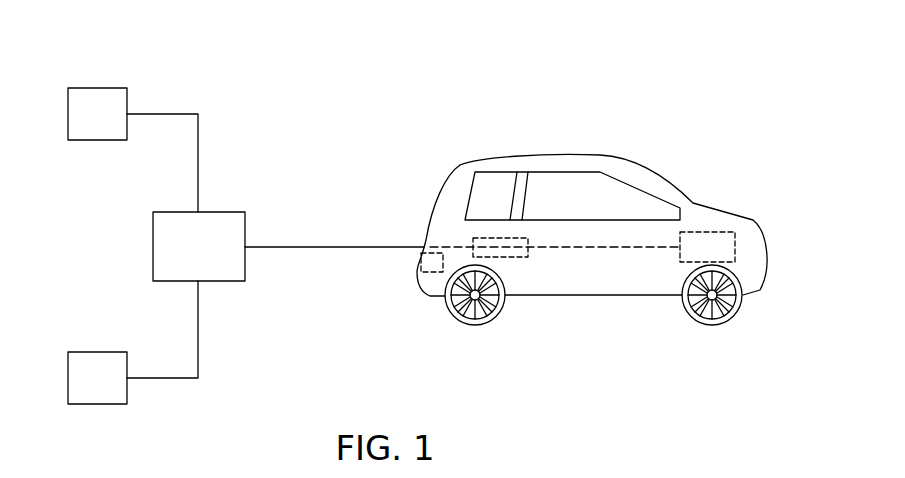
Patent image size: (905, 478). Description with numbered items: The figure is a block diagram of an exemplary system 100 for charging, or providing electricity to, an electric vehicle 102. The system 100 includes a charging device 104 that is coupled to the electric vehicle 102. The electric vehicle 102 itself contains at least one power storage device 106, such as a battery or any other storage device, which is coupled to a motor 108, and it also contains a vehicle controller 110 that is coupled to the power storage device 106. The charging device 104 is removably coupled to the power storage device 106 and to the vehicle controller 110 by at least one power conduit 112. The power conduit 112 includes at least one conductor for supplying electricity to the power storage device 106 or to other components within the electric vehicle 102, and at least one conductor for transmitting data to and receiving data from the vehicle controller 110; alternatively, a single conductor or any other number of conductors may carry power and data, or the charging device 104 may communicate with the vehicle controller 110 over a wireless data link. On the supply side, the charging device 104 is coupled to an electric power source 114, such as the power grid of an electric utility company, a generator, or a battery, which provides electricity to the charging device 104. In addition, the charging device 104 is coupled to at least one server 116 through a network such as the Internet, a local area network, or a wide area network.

The system 100 is at (440, 50).
The electric vehicle 102 is at (587, 120).
The charging device 104 is at (232, 212).
The power storage device 106 is at (524, 262).
The motor 108 is at (716, 232).
The vehicle controller 110 is at (418, 280).
The power conduit 112 is at (333, 247).
The electric power source 114 is at (88, 352).
The server 116 is at (103, 88).